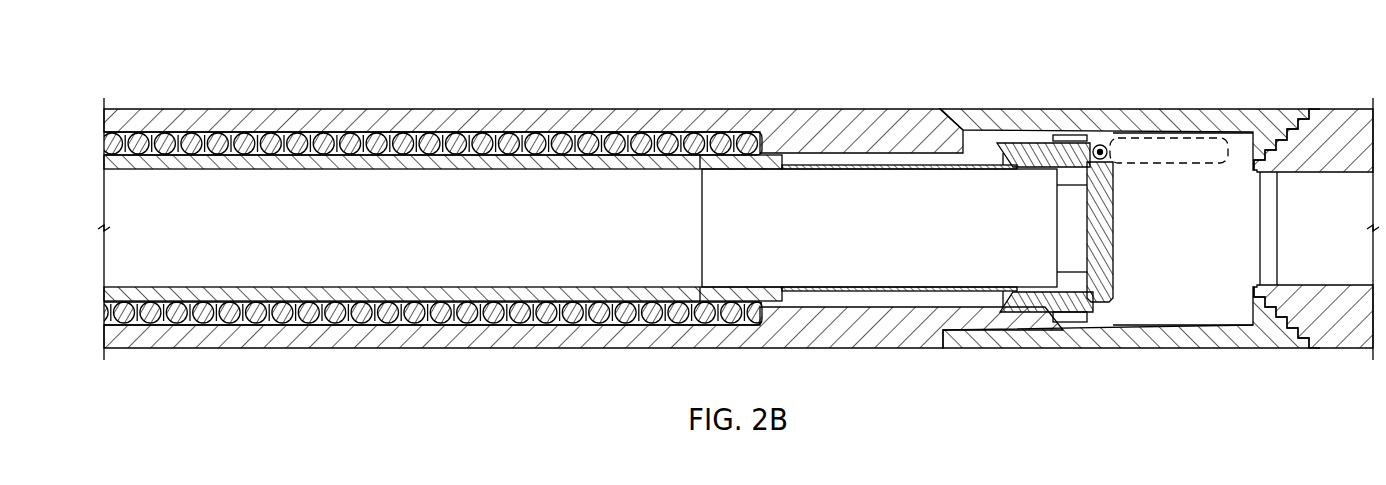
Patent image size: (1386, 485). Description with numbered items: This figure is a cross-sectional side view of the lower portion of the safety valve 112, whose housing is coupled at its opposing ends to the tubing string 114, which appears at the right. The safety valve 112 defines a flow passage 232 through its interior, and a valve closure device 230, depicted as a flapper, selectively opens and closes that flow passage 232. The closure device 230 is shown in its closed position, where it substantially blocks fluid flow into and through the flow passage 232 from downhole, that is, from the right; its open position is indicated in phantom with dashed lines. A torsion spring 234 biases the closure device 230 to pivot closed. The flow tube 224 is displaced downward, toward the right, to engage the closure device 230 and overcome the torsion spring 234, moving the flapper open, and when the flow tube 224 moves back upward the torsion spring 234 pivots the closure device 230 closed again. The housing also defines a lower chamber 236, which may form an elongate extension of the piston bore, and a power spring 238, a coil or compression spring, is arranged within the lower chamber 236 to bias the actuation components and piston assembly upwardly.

The safety valve 112 is at (433, 72).
The tubing string 114 is at (1347, 112).
The flow tube 224 is at (452, 160).
The valve closure device 230 is at (1113, 215).
The flow passage 232 is at (923, 231).
The torsion spring 234 is at (1095, 115).
The lower chamber 236 is at (313, 135).
The power spring 238 is at (543, 137).